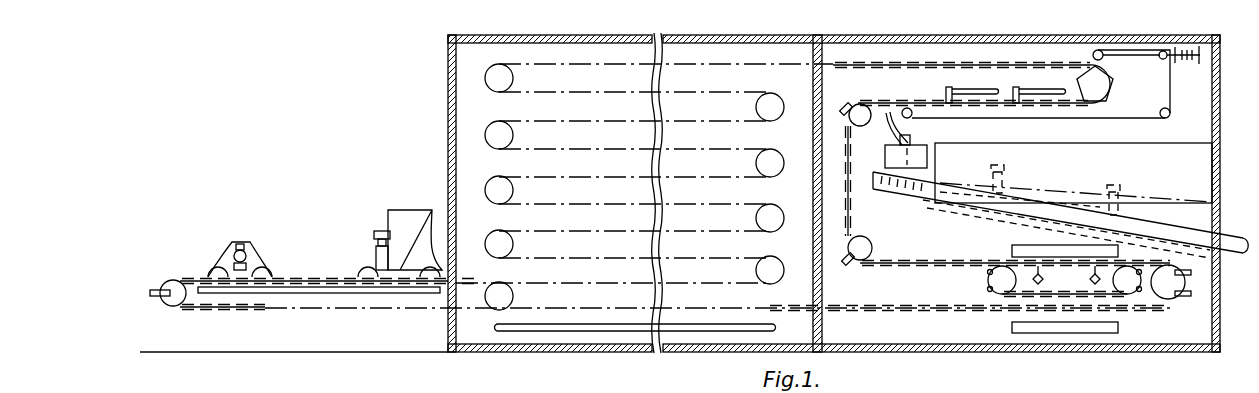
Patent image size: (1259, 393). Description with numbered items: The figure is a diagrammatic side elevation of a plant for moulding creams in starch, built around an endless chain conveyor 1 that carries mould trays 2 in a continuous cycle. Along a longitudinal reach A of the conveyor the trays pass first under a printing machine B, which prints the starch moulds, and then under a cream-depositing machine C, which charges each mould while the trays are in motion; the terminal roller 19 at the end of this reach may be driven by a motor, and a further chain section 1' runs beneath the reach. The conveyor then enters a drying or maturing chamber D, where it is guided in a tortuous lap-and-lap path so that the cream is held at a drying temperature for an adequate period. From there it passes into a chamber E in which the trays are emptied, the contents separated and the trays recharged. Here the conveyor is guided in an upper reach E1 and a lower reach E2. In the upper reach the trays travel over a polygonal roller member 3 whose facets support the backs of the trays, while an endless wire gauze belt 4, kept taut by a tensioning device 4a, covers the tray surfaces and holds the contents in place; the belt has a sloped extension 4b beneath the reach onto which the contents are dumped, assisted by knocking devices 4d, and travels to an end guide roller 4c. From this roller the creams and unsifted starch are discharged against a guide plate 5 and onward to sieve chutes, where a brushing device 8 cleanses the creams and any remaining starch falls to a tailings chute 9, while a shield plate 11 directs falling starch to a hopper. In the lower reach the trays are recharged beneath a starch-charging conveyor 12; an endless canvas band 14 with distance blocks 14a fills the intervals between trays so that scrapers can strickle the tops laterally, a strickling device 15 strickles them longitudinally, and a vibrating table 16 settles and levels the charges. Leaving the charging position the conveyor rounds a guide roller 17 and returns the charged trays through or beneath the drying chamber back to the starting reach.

The longitudinal reach A is at (660, 295).
The printing machine B is at (240, 249).
The cream-depositing machine C is at (400, 243).
The drying chamber D is at (834, 193).
The discharge chamber E is at (1221, 102).
The upper conveyor reach E1 is at (971, 150).
The lower conveyor reach E2 is at (1006, 270).
The chain conveyor 1 is at (675, 309).
The chain section 1' is at (390, 320).
The mould trays 2 is at (324, 279).
The polygonal roller member 3 is at (1095, 83).
The endless wire gauze belt 4 is at (1140, 50).
The tensioning device 4a is at (1182, 63).
The wire belt extension 4b is at (1073, 120).
The end guide roller 4c is at (912, 118).
The knocking devices 4d is at (1046, 91).
The guide plate 5 is at (888, 134).
The brushing device 8 is at (1022, 198).
The tailings chute 9 is at (1188, 254).
The shield plate 11 is at (1073, 175).
The starch-charging conveyor 12 is at (1024, 250).
The endless canvas band 14 is at (1118, 294).
The distance blocks 14a is at (1012, 297).
The longitudinal strickling device 15 is at (1142, 252).
The vibrating table 16 is at (1065, 282).
The guide roller 17 is at (1169, 282).
The terminal roller 19 is at (172, 308).